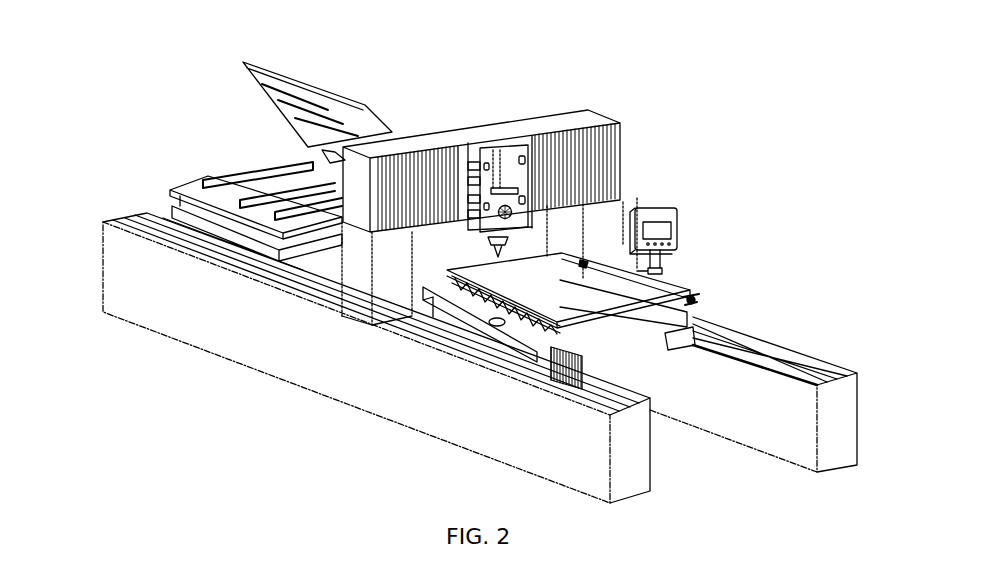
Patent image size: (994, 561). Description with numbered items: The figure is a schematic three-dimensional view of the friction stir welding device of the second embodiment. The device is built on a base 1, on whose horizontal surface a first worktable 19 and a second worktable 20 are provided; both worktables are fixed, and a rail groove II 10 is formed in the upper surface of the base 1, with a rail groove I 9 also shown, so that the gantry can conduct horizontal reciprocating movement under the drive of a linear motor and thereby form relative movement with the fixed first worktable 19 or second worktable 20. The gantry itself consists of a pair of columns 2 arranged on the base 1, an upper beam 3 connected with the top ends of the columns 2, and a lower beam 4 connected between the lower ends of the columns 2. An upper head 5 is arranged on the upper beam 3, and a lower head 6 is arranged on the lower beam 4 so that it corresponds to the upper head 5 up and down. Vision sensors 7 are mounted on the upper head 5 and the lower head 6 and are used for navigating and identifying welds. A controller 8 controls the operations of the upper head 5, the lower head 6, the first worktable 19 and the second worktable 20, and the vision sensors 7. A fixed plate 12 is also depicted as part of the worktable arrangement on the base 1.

The base 1 is at (162, 280).
The column 2 is at (362, 275).
The upper beam 3 is at (410, 173).
The lower beam 4 is at (565, 363).
The upper head 5 is at (520, 160).
The lower head 6 is at (498, 323).
The vision sensor 7 is at (505, 220).
The CNC controller 8 is at (677, 217).
The rail groove I 9 is at (757, 370).
The rail groove II 10 is at (288, 285).
The fixed plate 12 is at (808, 373).
The first worktable 19 is at (693, 291).
The second worktable 20 is at (255, 165).